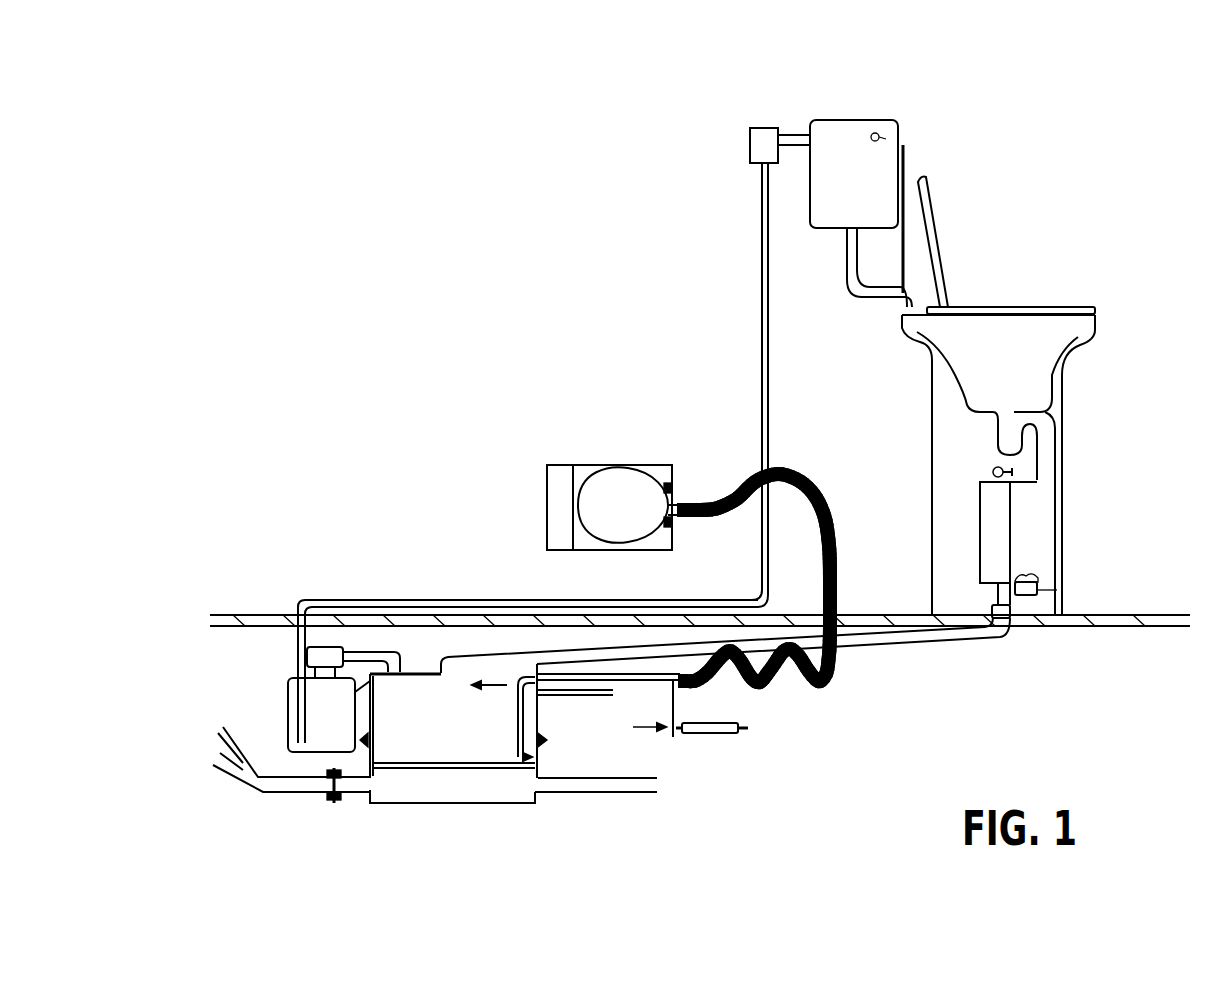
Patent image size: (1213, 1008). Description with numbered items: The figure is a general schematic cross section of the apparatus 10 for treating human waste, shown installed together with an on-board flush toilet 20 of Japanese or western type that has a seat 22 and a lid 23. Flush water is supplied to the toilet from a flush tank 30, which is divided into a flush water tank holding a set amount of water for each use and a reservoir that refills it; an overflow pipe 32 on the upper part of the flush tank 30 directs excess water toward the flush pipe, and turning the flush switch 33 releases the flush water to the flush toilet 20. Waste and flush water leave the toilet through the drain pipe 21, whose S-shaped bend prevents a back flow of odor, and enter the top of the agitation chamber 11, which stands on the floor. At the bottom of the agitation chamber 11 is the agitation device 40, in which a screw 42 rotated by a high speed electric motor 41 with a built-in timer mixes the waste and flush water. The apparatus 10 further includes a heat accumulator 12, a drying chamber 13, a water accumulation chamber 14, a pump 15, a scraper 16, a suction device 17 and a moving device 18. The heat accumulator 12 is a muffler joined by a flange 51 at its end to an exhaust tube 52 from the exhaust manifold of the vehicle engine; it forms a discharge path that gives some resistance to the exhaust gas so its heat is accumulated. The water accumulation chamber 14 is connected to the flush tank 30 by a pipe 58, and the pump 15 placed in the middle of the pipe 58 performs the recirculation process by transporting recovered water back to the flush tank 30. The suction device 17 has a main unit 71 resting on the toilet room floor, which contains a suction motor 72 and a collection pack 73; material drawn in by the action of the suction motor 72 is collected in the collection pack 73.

The apparatus for treating human waste 10 is at (372, 408).
The agitation chamber 11 is at (1060, 492).
The heat accumulator 12 is at (495, 803).
The drying chamber 13 is at (448, 747).
The water accumulation chamber 14 is at (287, 702).
The pump 15 is at (750, 143).
The scraper 16 is at (540, 757).
The suction device 17 is at (587, 465).
The moving device 18 is at (730, 715).
The flush toilet 20 is at (1097, 328).
The drain pipe 21 is at (1045, 430).
The seat 22 is at (1053, 307).
The lid 23 is at (932, 208).
The flush tank 30 is at (845, 120).
The overflow pipe 32 is at (908, 150).
The flush switch 33 is at (880, 133).
The agitation device 40 is at (1030, 575).
The electric motor 41 is at (1038, 592).
The screw 42 is at (1011, 607).
The flange 51 is at (333, 803).
The exhaust tube 52 is at (267, 793).
The pipe 58 is at (393, 601).
The main unit 71 is at (641, 467).
The suction motor 72 is at (547, 505).
The collection pack 73 is at (647, 477).